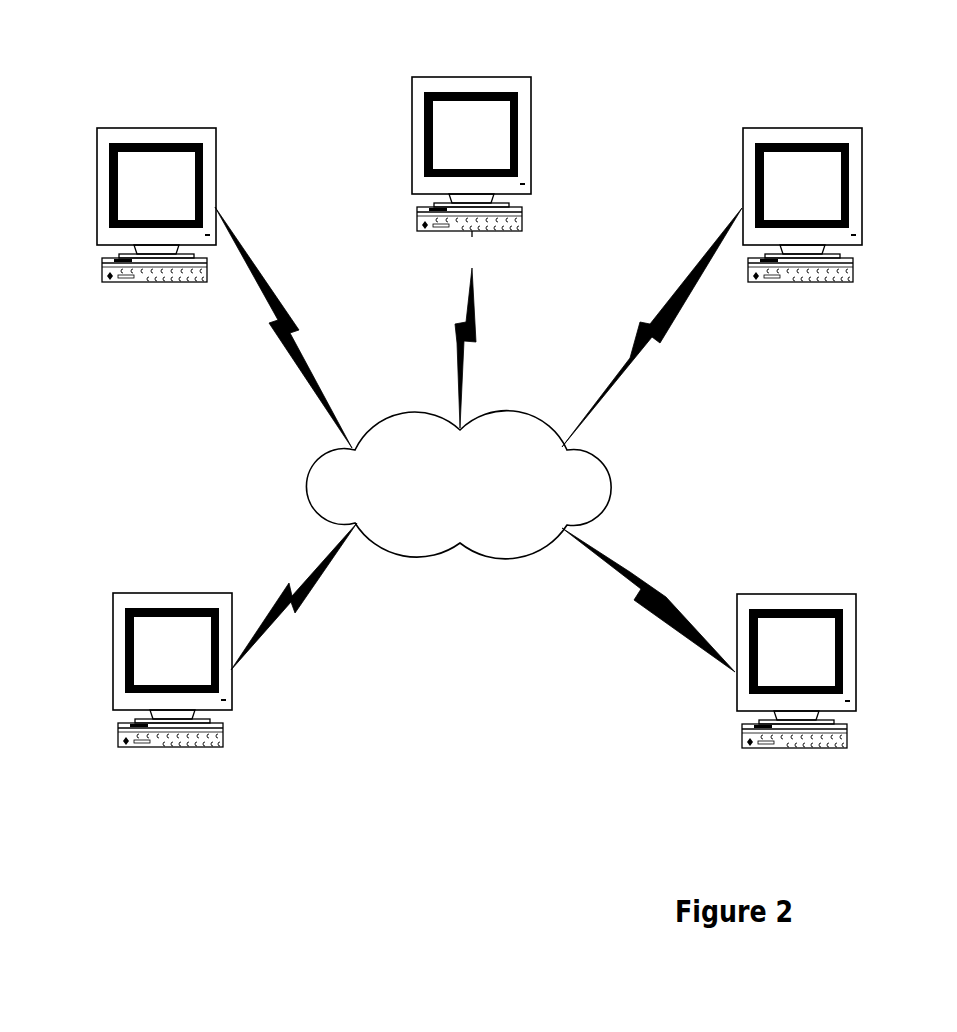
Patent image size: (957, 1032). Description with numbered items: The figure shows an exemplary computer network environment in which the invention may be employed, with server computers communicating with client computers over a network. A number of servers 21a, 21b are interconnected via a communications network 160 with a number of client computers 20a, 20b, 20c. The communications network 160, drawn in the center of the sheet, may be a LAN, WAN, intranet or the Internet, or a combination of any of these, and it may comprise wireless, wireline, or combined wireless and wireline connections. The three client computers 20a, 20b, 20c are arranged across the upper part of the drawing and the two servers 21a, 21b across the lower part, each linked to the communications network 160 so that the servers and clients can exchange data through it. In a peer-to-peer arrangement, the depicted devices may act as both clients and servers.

The client computer 20a is at (157, 127).
The client computer 20b is at (471, 77).
The client computer 20c is at (803, 127).
The server 21a is at (160, 592).
The server 21b is at (838, 595).
The communications network 160 is at (503, 563).